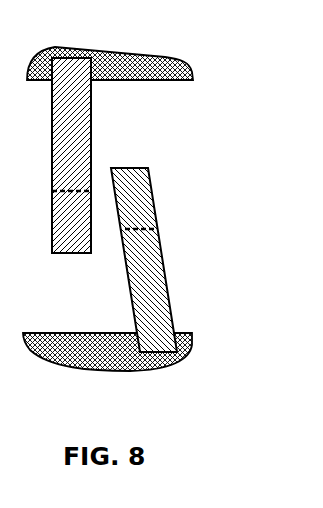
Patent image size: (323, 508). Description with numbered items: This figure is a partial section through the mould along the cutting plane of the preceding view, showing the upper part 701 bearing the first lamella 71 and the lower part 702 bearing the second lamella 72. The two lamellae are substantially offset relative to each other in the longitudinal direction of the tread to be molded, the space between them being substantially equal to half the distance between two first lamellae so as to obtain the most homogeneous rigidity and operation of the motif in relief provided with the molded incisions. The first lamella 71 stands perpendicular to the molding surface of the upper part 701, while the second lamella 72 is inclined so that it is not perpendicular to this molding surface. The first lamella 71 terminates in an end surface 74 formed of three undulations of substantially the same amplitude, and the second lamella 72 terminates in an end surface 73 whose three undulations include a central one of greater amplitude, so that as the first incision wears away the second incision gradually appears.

The upper mould part 701 is at (125, 60).
The lower mould part 702 is at (92, 358).
The first lamella 71 is at (78, 117).
The second lamella 72 is at (147, 257).
The end surface 73 is at (143, 168).
The end surface 74 is at (68, 258).